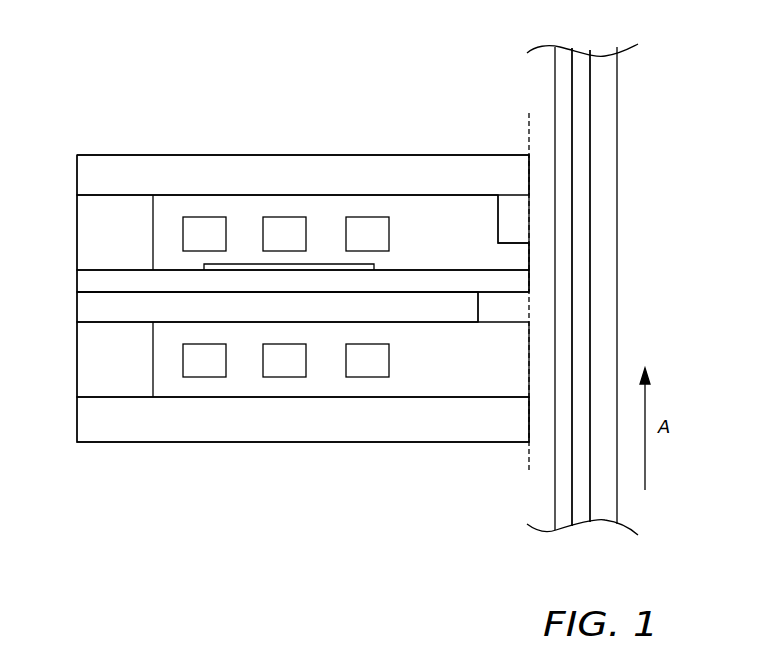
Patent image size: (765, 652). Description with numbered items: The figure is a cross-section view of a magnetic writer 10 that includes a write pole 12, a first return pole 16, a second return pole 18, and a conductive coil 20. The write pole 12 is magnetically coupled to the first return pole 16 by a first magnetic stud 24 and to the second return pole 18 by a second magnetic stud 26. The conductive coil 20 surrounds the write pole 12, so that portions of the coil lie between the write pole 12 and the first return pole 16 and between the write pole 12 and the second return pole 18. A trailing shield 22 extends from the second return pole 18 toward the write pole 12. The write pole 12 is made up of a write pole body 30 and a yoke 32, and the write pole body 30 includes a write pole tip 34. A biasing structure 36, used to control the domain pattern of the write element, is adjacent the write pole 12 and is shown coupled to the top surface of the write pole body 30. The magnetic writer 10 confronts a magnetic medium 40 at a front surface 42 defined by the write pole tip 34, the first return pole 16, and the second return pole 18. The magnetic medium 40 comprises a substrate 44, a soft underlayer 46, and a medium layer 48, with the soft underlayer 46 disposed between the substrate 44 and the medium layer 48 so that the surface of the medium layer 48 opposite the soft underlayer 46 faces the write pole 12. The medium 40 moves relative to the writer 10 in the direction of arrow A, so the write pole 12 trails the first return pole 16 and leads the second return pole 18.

The magnetic writer 10 is at (148, 133).
The write pole 12 is at (70, 291).
The first return pole 16 is at (83, 418).
The second return pole 18 is at (83, 180).
The conductive coil 20 is at (286, 297).
The trailing shield 22 is at (505, 229).
The first magnetic stud 24 is at (83, 375).
The second magnetic stud 26 is at (88, 229).
The write pole body 30 is at (81, 282).
The yoke 32 is at (80, 310).
The write pole tip 34 is at (517, 292).
The biasing structure 36 is at (373, 269).
The magnetic medium 40 is at (645, 90).
The front surface 42 is at (527, 135).
The substrate 44 is at (605, 198).
The soft underlayer 46 is at (578, 225).
The medium layer 48 is at (561, 265).